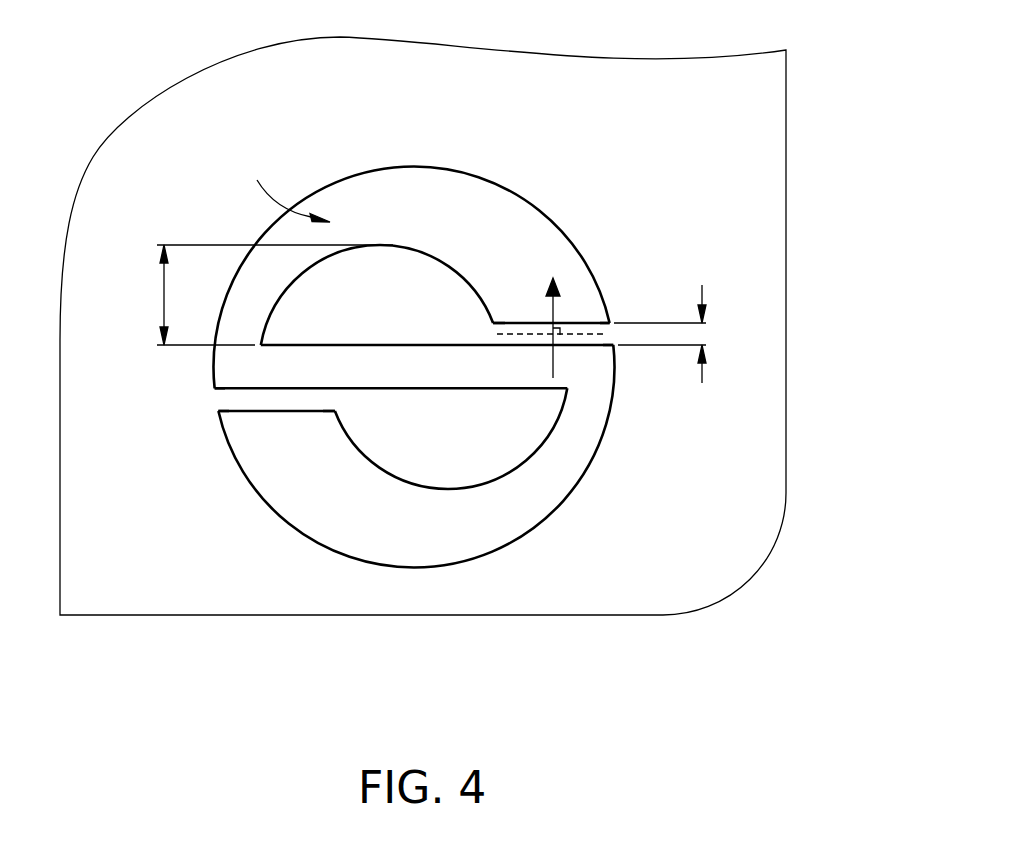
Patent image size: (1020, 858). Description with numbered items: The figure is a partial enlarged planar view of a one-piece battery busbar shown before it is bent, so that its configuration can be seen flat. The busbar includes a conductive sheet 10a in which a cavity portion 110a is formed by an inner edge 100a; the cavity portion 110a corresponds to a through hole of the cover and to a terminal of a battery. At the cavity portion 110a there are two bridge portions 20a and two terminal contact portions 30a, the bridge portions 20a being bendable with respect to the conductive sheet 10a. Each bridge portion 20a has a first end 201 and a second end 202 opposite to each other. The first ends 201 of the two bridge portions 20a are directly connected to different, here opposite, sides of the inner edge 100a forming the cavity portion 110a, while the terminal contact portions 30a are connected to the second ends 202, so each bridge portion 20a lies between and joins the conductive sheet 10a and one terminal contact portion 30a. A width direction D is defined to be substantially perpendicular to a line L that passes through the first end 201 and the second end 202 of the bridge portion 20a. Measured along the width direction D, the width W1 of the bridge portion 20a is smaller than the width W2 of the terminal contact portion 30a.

The conductive sheet 10a is at (760, 152).
The inner edge 100a is at (373, 170).
The cavity portion 110a is at (281, 191).
The bridge portion 20a is at (572, 328).
The terminal contact portion 30a is at (397, 283).
The first end 201 is at (612, 326).
The second end 202 is at (500, 323).
The width of the bridge portion W1 is at (680, 334).
The width of the terminal contact portion W2 is at (256, 295).
The width direction D is at (553, 363).
The line L is at (583, 334).